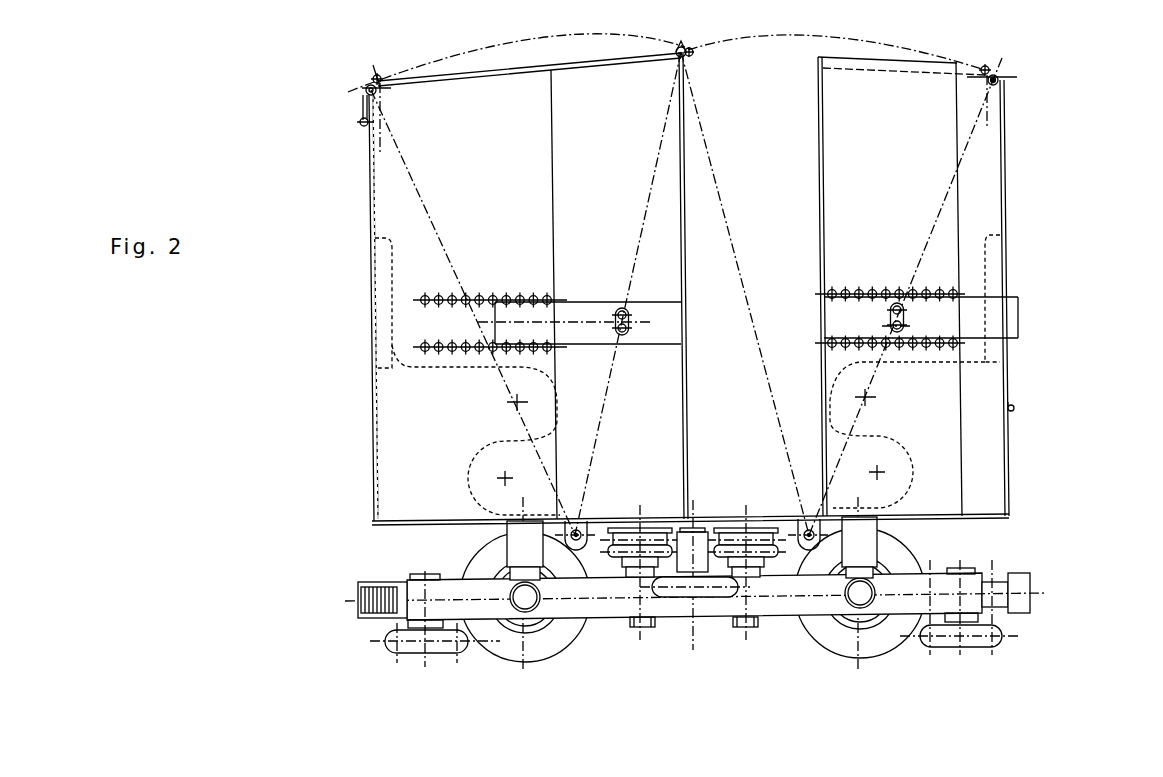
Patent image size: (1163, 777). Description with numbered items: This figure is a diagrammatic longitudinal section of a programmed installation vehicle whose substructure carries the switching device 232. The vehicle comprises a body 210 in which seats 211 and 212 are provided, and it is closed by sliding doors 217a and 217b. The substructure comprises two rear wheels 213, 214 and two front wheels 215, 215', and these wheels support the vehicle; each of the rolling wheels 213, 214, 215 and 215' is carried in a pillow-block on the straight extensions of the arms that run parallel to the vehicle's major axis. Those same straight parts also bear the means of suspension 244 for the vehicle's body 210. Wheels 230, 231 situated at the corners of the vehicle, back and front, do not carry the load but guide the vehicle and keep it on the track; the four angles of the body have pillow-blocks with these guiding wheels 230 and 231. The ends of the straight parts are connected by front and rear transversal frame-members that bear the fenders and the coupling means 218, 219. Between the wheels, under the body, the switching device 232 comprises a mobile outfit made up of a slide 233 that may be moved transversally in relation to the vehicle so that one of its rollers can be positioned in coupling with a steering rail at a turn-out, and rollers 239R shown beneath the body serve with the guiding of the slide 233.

The body 210 is at (360, 319).
The seat 211 is at (458, 476).
The seat 212 is at (925, 467).
The rear wheel 213 is at (525, 603).
The rear wheel 214 is at (516, 672).
The front wheel 215 is at (860, 603).
The front wheel 215' is at (860, 603).
The sliding door 217a is at (583, 164).
The sliding door 217b is at (912, 161).
The coupling means 218 is at (1018, 581).
The coupling means 219 is at (360, 605).
The guiding wheel 230 is at (383, 646).
The guiding wheel 231 is at (982, 637).
The switching device 232 is at (718, 578).
The slide 233 is at (673, 528).
The rubber spring element 239R is at (618, 560).
The means of suspension 244 is at (513, 557).